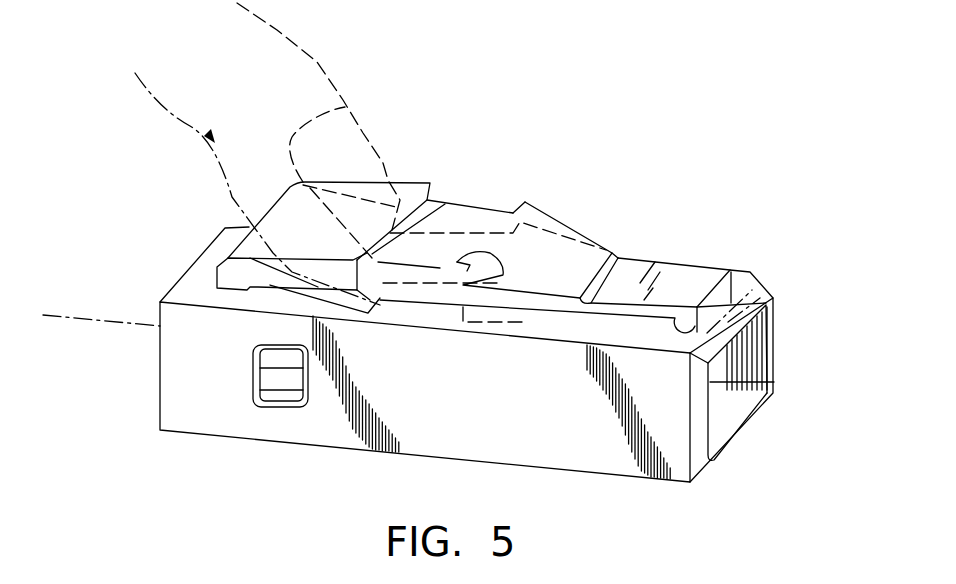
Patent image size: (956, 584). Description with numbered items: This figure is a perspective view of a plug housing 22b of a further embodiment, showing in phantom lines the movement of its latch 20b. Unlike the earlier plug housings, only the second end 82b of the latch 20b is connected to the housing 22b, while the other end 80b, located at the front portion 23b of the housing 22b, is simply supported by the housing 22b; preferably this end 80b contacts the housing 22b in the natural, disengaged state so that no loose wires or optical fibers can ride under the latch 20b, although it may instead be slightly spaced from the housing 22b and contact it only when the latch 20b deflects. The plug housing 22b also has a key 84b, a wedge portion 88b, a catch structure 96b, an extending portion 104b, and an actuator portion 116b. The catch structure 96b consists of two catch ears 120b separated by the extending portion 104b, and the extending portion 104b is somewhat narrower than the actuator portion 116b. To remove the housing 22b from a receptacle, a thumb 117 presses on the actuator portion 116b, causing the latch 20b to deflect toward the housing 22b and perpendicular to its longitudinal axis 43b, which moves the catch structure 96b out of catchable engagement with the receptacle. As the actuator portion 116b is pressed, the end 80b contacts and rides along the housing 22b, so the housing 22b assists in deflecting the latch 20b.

The latch 20b is at (592, 218).
The plug housing 22b is at (332, 455).
The front portion 23b is at (712, 405).
The longitudinal axis 43b is at (826, 385).
The end 80b is at (751, 276).
The second end 82b is at (215, 280).
The key 84b is at (762, 300).
The wedge portion 88b is at (560, 214).
The catch structure 96b is at (516, 200).
The extending portion 104b is at (450, 210).
The actuator portion 116b is at (377, 182).
The thumb 117 is at (222, 110).
The catch ears 120b is at (512, 209).